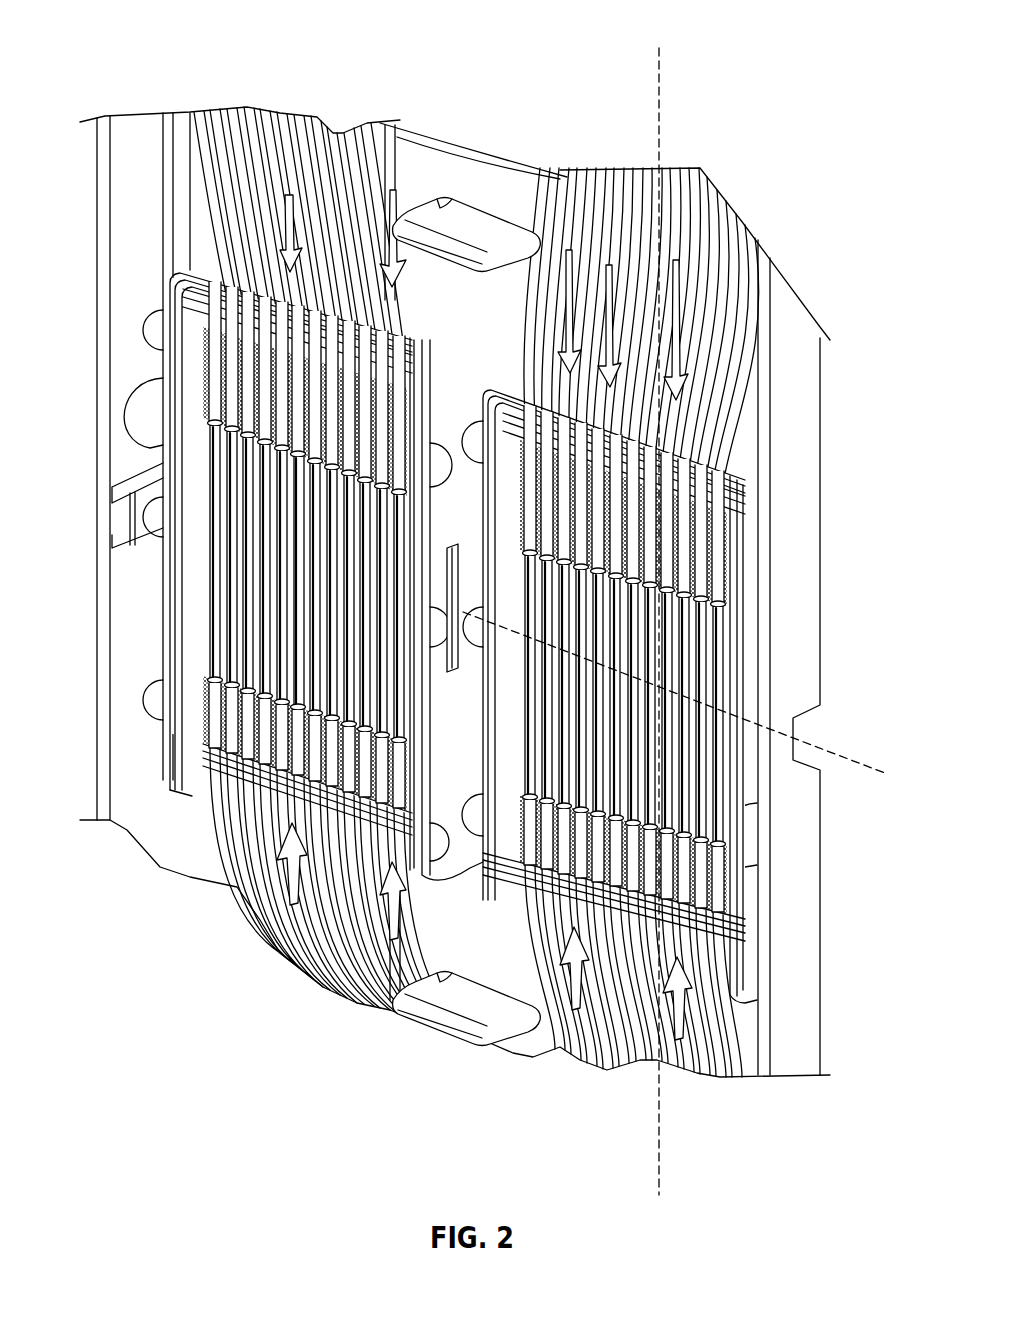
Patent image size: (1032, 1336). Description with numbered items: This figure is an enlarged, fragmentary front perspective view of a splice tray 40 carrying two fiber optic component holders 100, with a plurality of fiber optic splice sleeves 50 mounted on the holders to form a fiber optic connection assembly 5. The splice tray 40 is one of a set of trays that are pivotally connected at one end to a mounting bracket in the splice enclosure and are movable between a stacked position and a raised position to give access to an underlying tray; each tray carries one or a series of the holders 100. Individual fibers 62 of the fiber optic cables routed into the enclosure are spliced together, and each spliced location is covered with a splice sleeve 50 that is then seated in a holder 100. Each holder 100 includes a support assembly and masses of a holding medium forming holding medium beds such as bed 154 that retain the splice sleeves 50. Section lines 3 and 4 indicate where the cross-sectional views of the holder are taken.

The fiber optic connection assembly 5 is at (127, 577).
The splice tray 40 is at (787, 310).
The fiber optic splice sleeve 50 is at (217, 582).
The individual fibers 62 is at (245, 118).
The fiber optic component holder 100 is at (423, 305).
The holding medium bed 154 is at (557, 490).
The section line 3 is at (440, 613).
The section line 4 is at (657, 50).